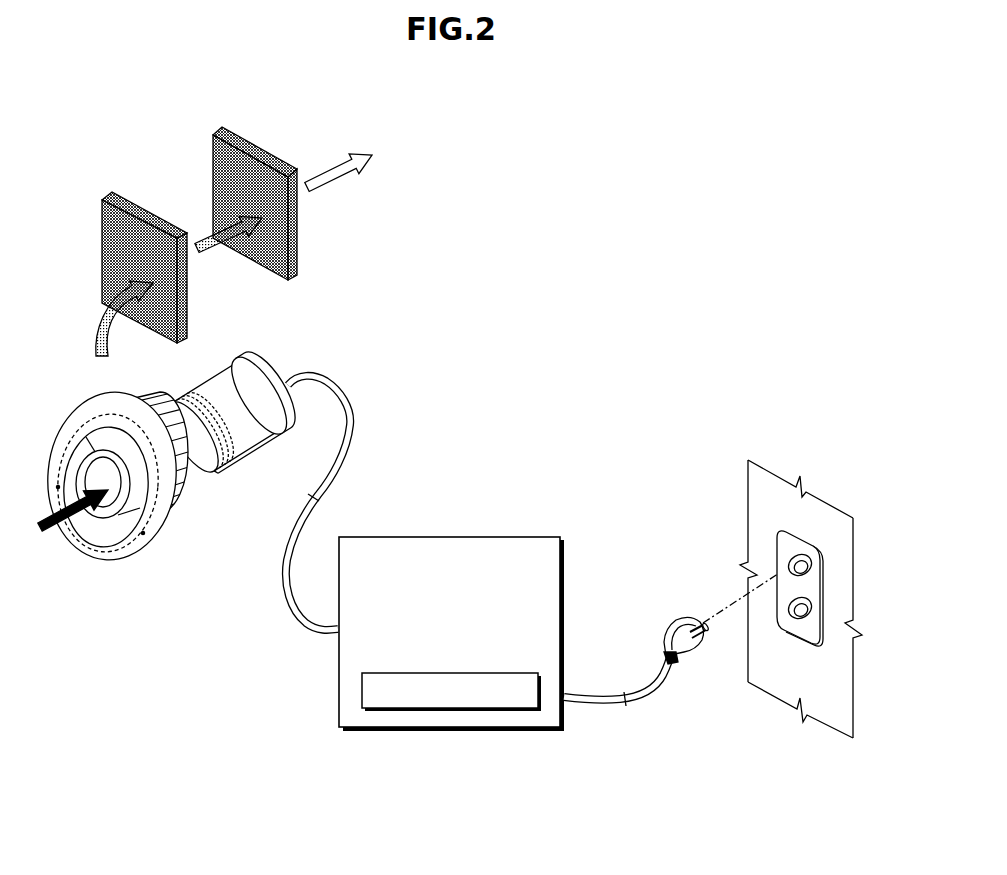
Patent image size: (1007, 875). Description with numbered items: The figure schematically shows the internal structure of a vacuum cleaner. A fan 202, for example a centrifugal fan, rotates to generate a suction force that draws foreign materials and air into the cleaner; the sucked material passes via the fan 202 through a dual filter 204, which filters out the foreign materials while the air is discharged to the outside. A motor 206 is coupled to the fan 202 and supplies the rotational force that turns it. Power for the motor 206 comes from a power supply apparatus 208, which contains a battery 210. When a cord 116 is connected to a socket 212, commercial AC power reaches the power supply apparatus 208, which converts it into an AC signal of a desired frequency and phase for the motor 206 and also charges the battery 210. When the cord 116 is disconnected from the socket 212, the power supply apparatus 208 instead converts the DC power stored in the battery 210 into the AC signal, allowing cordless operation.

The dual filter 204 is at (212, 182).
The fan 202 is at (181, 511).
The motor 206 is at (247, 412).
The power supply apparatus 208 is at (535, 537).
The battery 210 is at (513, 673).
The cord 116 is at (683, 617).
The socket 212 is at (808, 637).